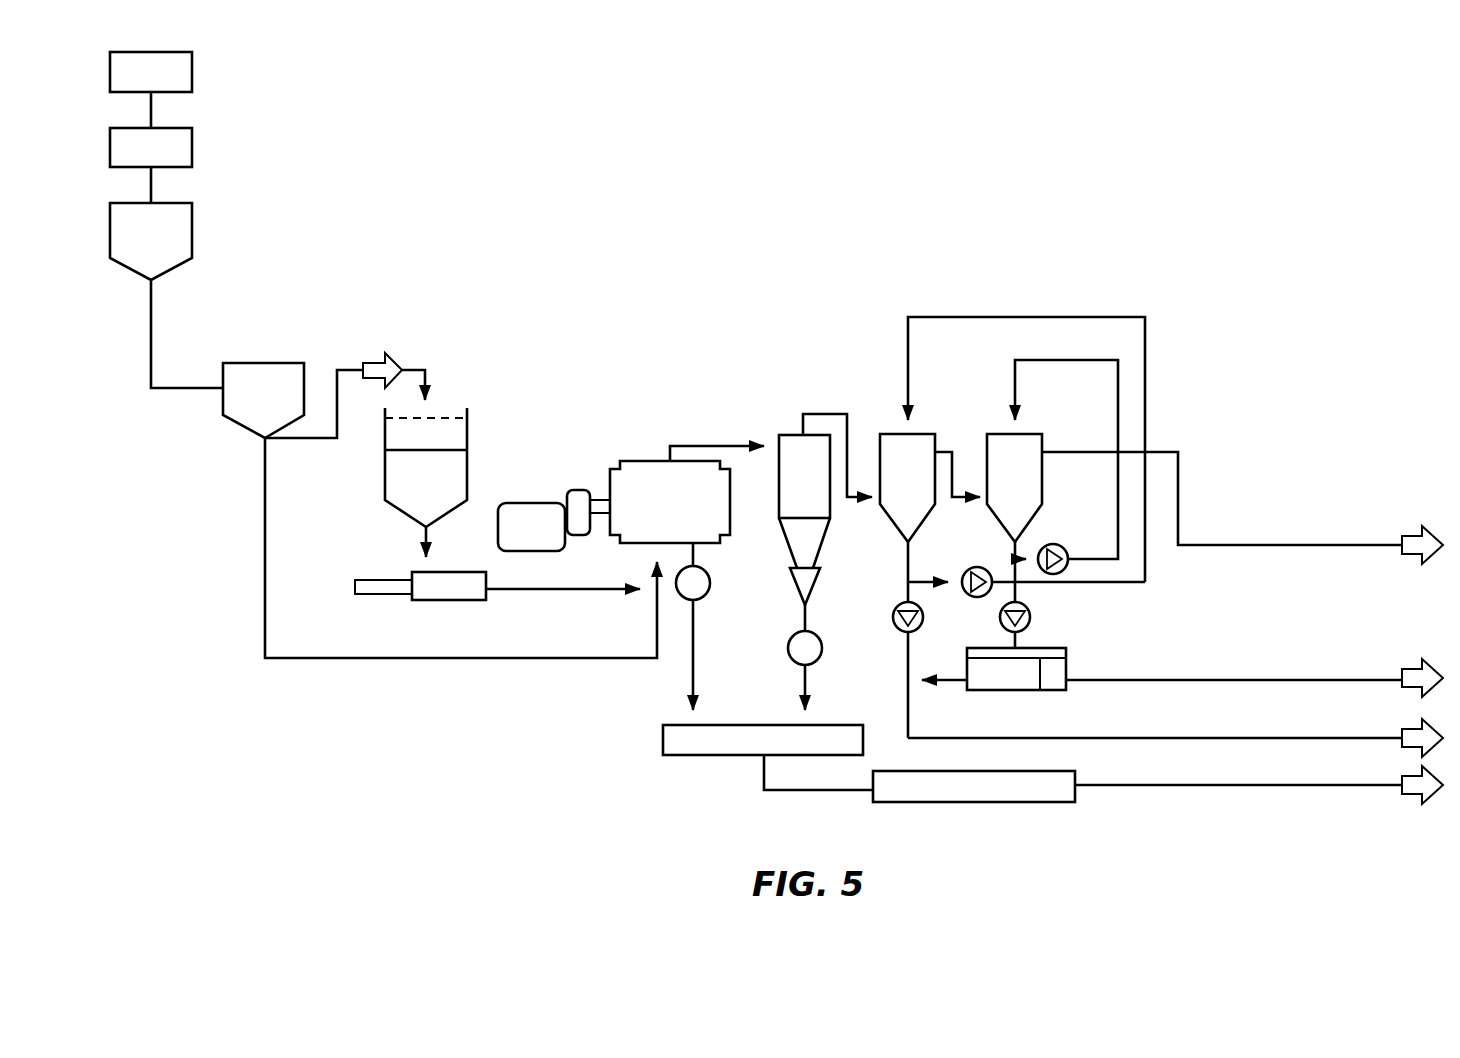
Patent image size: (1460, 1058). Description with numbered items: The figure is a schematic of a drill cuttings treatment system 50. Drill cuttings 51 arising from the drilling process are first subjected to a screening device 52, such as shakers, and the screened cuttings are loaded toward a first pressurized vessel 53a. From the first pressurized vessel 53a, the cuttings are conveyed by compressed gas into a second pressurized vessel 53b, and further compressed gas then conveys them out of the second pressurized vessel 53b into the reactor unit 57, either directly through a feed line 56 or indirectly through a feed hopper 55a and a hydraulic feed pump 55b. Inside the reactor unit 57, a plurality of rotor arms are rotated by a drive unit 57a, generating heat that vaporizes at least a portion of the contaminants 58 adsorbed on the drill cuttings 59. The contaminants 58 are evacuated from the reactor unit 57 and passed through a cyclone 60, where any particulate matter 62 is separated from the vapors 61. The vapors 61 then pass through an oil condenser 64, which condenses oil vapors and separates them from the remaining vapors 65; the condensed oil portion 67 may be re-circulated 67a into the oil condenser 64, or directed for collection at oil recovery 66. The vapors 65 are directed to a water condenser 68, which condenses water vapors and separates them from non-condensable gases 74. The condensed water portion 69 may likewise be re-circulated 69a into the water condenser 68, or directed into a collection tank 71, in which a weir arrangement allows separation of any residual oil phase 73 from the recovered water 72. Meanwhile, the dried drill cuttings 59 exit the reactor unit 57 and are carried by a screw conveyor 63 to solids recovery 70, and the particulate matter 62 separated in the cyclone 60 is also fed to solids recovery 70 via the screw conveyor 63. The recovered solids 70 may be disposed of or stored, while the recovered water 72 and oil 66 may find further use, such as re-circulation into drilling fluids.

The system 50 is at (372, 122).
The drill cuttings 51 is at (167, 87).
The screening device 52 is at (167, 163).
The first pressurized vessel 53a is at (175, 249).
The second pressurized vessel 53b is at (289, 405).
The feed hopper 55a is at (449, 493).
The hydraulic feed pump 55b is at (440, 600).
The feed line 56 is at (330, 660).
The reactor unit 57 is at (686, 517).
The drive unit 57a is at (555, 540).
The contaminants 58 is at (712, 446).
The drill cuttings 59 is at (697, 643).
The cyclone 60 is at (821, 486).
The vapors 61 is at (830, 413).
The particulate matter 62 is at (810, 688).
The screw conveyor 63 is at (690, 758).
The oil condenser 64 is at (924, 486).
The vapors 65 is at (945, 452).
The oil recovery 66 is at (1268, 738).
The condensed oil portion 67 is at (905, 568).
The re-circulation 67a is at (1070, 317).
The water condenser 68 is at (1031, 486).
The condensed water portion 69 is at (1008, 570).
The re-circulation 69a is at (1068, 360).
The solids recovery 70 is at (1268, 785).
The collection tank 71 is at (1068, 652).
The recovered water 72 is at (1268, 678).
The residual oil phase 73 is at (945, 685).
The non-condensable gases 74 is at (1268, 545).